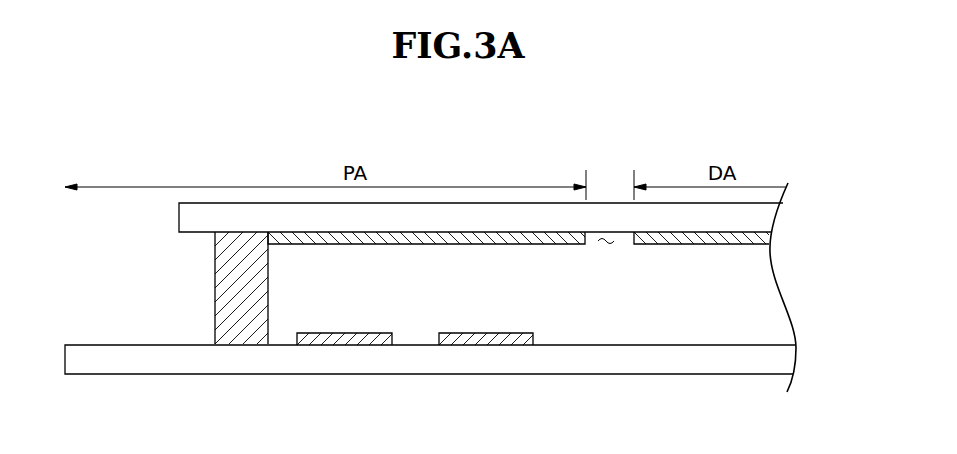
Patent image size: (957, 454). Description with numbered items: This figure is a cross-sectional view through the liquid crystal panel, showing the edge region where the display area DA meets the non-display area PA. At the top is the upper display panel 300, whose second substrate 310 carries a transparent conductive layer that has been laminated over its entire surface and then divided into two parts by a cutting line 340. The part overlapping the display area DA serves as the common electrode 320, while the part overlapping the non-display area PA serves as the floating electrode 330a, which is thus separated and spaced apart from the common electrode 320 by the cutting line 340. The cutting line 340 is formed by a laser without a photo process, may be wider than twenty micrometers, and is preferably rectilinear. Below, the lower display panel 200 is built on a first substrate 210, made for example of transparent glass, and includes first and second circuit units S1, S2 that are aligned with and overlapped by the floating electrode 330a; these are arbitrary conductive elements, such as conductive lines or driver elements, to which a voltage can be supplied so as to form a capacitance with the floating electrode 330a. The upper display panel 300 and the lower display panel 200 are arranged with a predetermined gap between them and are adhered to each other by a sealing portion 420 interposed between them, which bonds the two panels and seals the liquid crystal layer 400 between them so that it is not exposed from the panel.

The upper display panel 300 is at (515, 176).
The second substrate 310 is at (223, 217).
The common electrode 320 is at (668, 232).
The floating electrode 330a is at (527, 232).
The cutting line 340 is at (605, 236).
The liquid crystal layer 400 is at (533, 332).
The sealing portion 420 is at (240, 322).
The lower display panel 200 is at (458, 383).
The first substrate 210 is at (413, 355).
The first circuit unit S1 is at (352, 347).
The second circuit unit S2 is at (490, 342).